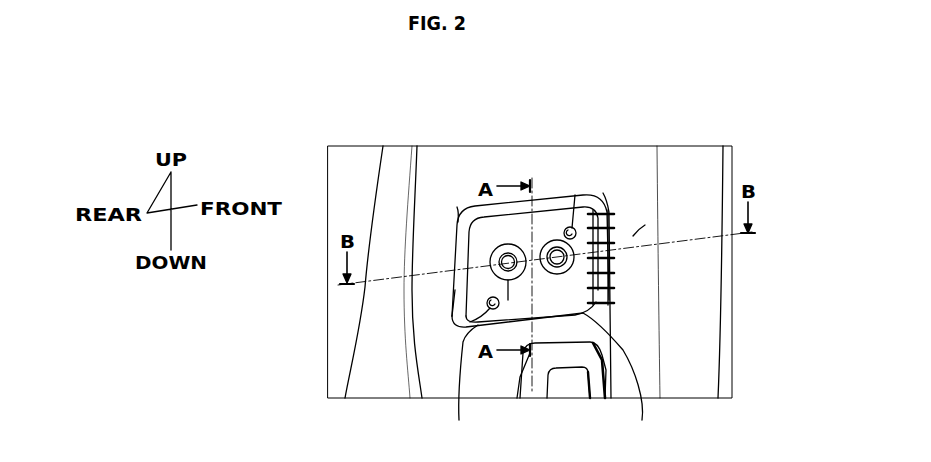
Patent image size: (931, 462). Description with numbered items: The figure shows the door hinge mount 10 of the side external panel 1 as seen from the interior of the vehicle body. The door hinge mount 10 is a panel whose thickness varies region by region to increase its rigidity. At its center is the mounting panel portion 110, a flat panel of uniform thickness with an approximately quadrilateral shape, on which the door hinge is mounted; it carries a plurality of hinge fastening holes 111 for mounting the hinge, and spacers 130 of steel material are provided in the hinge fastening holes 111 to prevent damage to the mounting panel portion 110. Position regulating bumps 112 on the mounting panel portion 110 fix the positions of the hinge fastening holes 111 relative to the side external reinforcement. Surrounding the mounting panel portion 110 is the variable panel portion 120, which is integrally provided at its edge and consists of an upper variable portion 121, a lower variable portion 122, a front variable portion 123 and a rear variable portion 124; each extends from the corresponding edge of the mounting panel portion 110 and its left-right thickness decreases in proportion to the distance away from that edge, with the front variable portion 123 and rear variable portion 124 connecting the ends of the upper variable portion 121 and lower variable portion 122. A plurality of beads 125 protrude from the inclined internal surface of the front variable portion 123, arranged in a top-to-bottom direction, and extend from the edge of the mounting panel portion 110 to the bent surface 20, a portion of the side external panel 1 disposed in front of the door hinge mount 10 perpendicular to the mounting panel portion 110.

The side external panel 1 is at (637, 147).
The door hinge mount 10 is at (393, 97).
The bent surface 20 is at (645, 225).
The mounting panel portion 110 is at (480, 237).
The hinge fastening holes 111 is at (520, 250).
The position regulating bumps 112 is at (608, 207).
The variable panel portion 120 is at (457, 207).
The upper variable portion 121 is at (554, 218).
The lower variable portion 122 is at (543, 330).
The front variable portion 123 is at (603, 278).
The rear variable portion 124 is at (457, 298).
The beads 125 is at (610, 210).
The spacers 130 is at (553, 379).